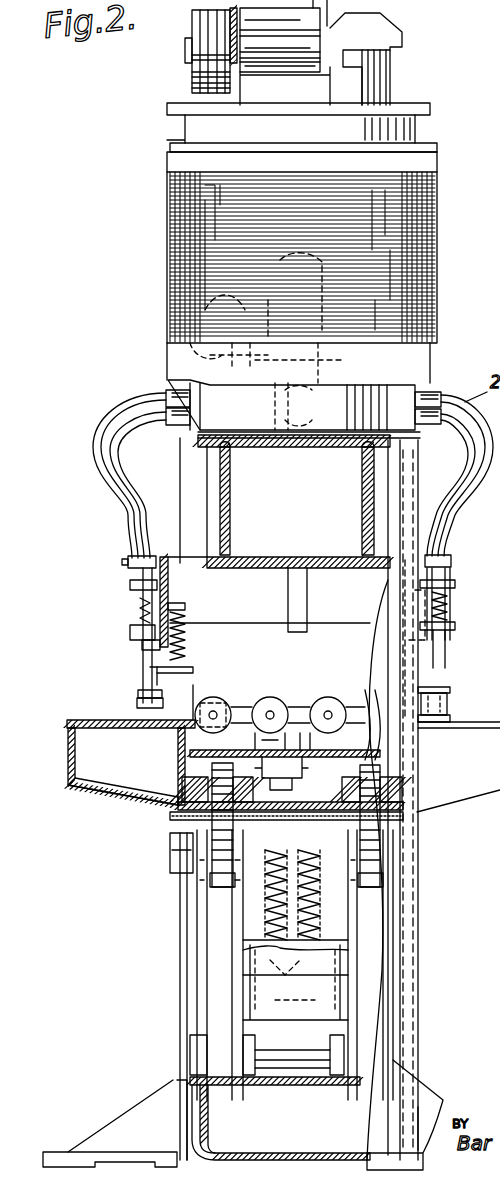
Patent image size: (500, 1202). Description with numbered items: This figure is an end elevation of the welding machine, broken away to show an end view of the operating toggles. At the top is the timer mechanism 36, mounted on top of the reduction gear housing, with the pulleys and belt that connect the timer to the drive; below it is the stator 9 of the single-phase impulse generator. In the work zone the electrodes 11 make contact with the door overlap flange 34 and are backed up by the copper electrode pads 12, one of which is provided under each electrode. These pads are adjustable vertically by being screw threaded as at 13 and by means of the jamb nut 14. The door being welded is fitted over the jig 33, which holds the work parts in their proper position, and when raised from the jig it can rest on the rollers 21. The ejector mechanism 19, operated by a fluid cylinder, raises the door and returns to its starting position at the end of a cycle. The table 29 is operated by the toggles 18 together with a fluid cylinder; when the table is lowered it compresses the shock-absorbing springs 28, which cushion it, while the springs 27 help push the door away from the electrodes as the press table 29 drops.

The timer mechanism 36 is at (232, 3).
The stator 9 is at (167, 226).
The door overlap flange 34 is at (142, 692).
The jamb nut 14 is at (140, 698).
The screw thread 13 is at (133, 712).
The springs 27 is at (185, 652).
The jig 33 is at (177, 717).
The rollers 21 is at (268, 700).
The ejector mechanism 19 is at (357, 705).
The electrodes 11 is at (440, 668).
The electrode pads 12 is at (445, 690).
The table 29 is at (478, 722).
The shock-absorbing springs 28 is at (265, 888).
The toggles 18 is at (200, 931).